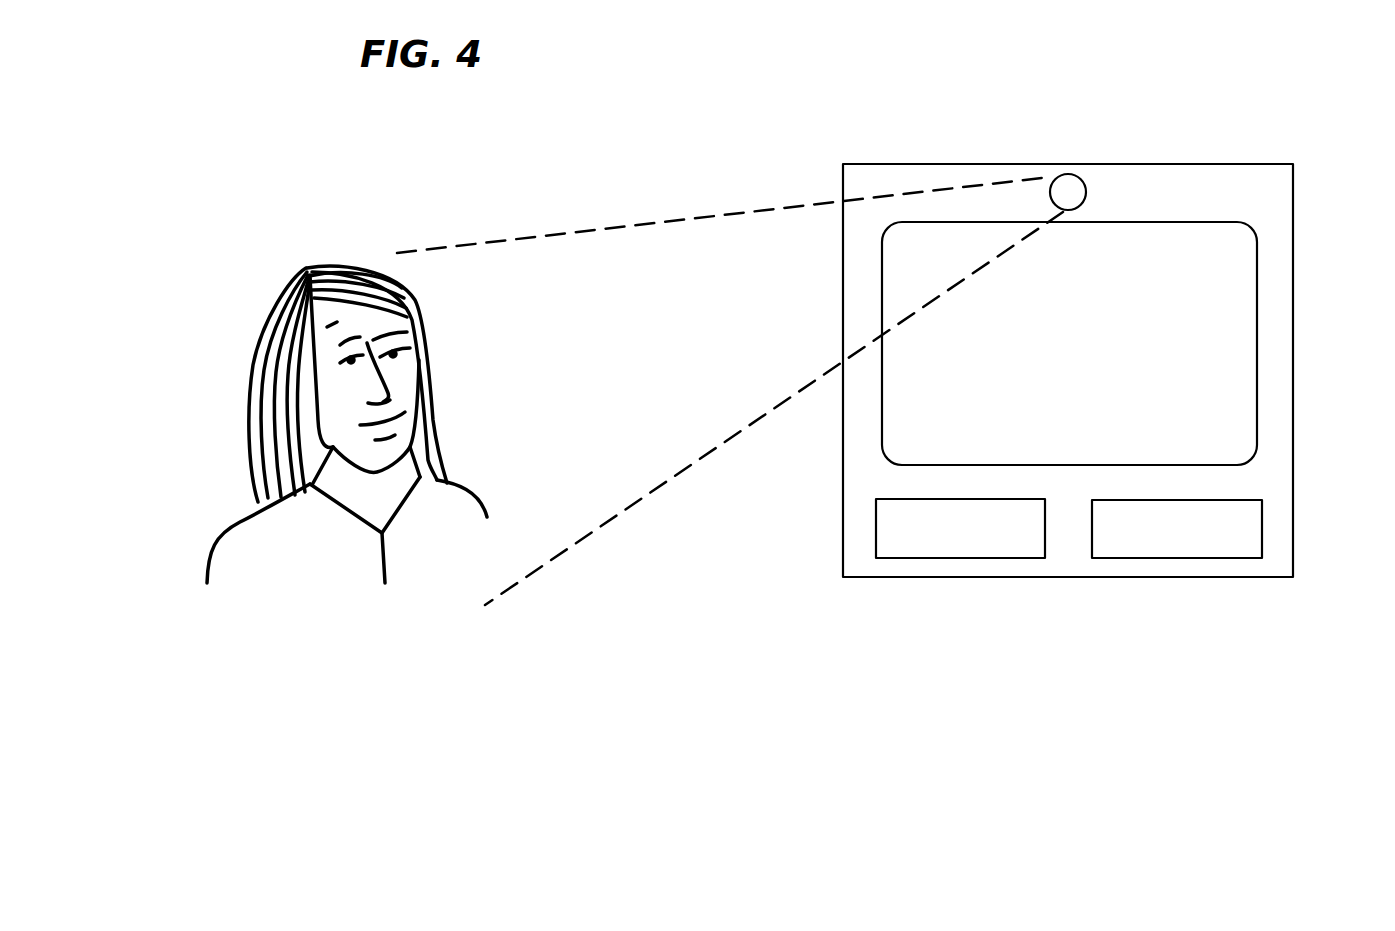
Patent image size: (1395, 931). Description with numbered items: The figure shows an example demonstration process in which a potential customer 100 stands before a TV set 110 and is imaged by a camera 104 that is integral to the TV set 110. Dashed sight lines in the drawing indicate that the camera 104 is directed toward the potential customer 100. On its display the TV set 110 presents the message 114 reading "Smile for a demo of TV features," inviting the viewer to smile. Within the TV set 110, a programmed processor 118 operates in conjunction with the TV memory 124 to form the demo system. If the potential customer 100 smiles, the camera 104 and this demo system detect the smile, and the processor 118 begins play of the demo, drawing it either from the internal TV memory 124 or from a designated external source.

The potential customer 100 is at (207, 555).
The camera 104 is at (1087, 192).
The TV set 110 is at (957, 163).
The message 114 is at (1180, 382).
The programmed processor 118 is at (960, 558).
The TV memory 124 is at (1177, 558).